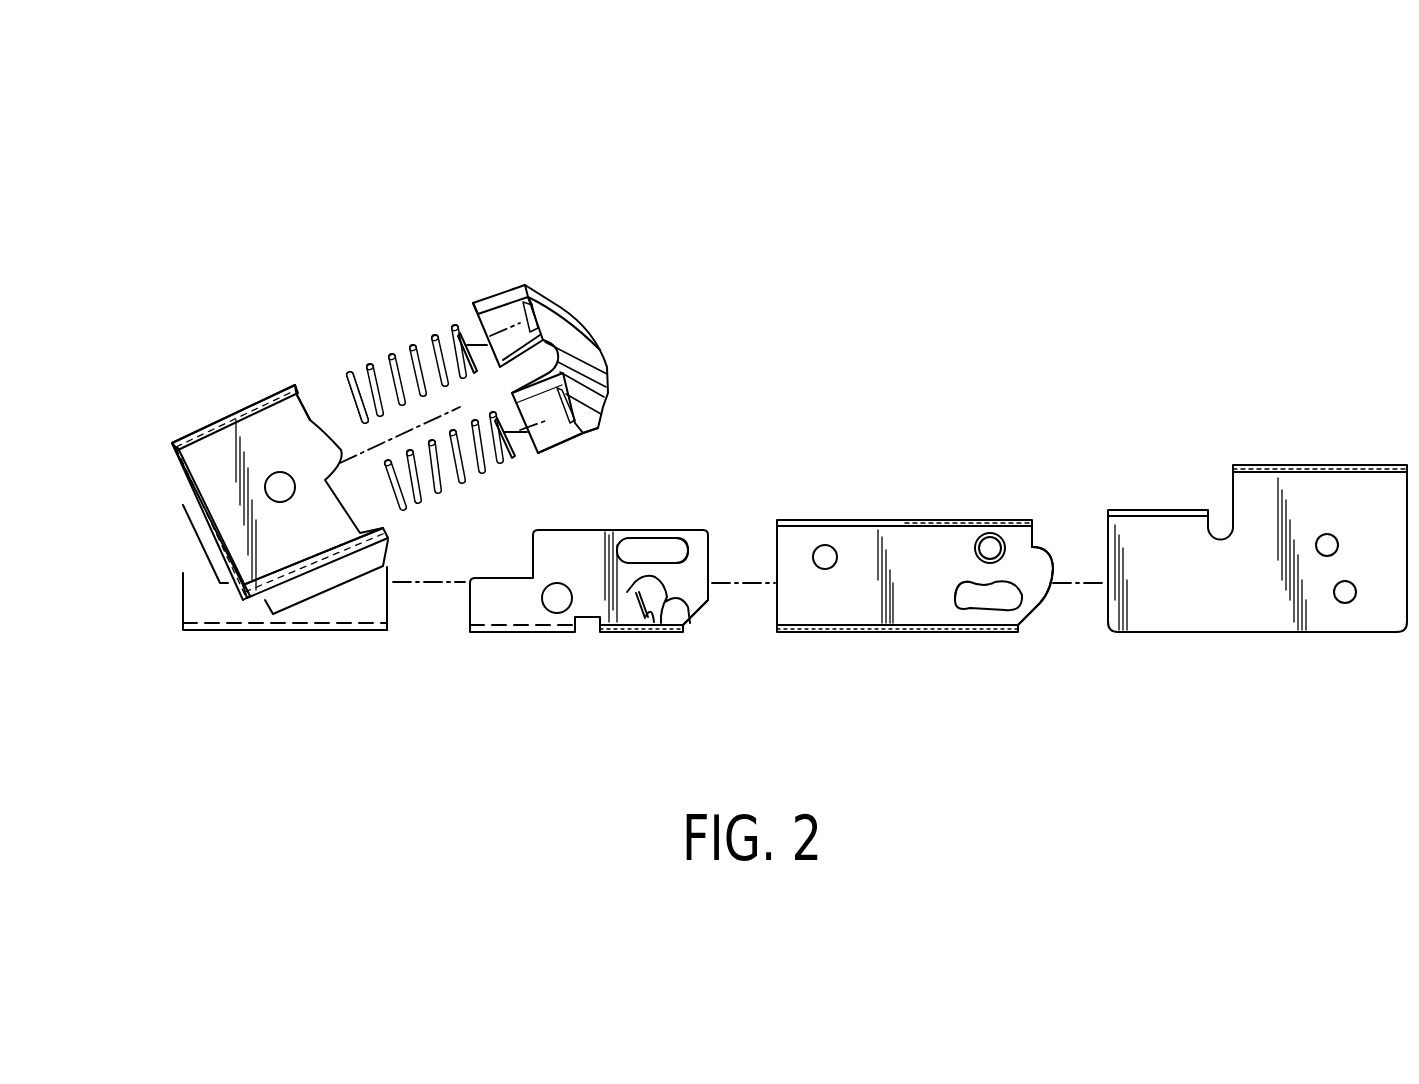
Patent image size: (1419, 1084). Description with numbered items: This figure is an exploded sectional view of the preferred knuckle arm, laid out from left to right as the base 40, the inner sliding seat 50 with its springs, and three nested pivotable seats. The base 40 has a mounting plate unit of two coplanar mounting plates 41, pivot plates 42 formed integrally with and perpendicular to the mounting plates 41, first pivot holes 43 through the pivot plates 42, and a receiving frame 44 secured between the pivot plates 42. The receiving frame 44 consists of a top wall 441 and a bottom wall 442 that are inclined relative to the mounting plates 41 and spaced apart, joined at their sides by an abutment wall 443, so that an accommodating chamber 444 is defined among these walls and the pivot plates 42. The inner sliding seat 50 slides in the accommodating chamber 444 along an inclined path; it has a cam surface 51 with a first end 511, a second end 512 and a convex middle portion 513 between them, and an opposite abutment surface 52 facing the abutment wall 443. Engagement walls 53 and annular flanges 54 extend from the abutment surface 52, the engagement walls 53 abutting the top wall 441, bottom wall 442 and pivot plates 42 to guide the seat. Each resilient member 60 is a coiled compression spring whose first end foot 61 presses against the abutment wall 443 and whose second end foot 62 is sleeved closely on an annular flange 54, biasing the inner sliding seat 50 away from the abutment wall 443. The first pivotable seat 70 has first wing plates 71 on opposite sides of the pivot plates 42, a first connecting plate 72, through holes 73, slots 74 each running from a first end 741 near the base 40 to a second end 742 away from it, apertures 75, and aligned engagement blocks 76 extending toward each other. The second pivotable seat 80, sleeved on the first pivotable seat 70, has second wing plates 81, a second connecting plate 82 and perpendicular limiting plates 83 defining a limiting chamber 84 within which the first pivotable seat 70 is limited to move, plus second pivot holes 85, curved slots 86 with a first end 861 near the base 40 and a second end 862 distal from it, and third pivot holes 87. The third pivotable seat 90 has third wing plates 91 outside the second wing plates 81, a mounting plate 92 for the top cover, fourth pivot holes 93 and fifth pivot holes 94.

The base 40 is at (183, 586).
The mounting plates 41 is at (230, 630).
The pivot plates 42 is at (193, 570).
The first pivot holes 43 is at (275, 487).
The receiving frame 44 is at (270, 388).
The top wall 441 is at (216, 418).
The bottom wall 442 is at (314, 592).
The abutment wall 443 is at (186, 490).
The accommodating chamber 444 is at (300, 393).
The inner sliding seat 50 is at (518, 283).
The cam surface 51 is at (597, 342).
The first end 511 is at (607, 412).
The second end 512 is at (538, 298).
The convex middle portion 513 is at (608, 359).
The abutment surface 52 is at (597, 428).
The engagement walls 53 is at (493, 294).
The annular flanges 54 is at (531, 293).
The resilient members 60 is at (391, 360).
The first end foot 61 is at (348, 371).
The second end foot 62 is at (453, 334).
The first pivotable seat 70 is at (483, 634).
The first wing plates 71 is at (698, 598).
The first connecting plate 72 is at (623, 633).
The through holes 73 is at (553, 606).
The slots 74 is at (658, 547).
The first end 741 is at (618, 550).
The second end 742 is at (694, 544).
The apertures 75 is at (687, 618).
The engagement blocks 76 is at (650, 621).
The second pivotable seat 80 is at (817, 637).
The second wing plates 81 is at (870, 614).
The second connecting plate 82 is at (960, 520).
The limiting plates 83 is at (897, 626).
The limiting chamber 84 is at (775, 618).
The second pivot holes 85 is at (823, 551).
The curved slots 86 is at (993, 607).
The first end 861 is at (957, 598).
The second end 862 is at (1033, 594).
The third pivot holes 87 is at (990, 547).
The third pivotable seat 90 is at (1230, 637).
The third wing plates 91 is at (1283, 631).
The mounting plate 92 is at (1267, 467).
The fourth pivot holes 93 is at (1327, 543).
The fifth pivot holes 94 is at (1347, 598).